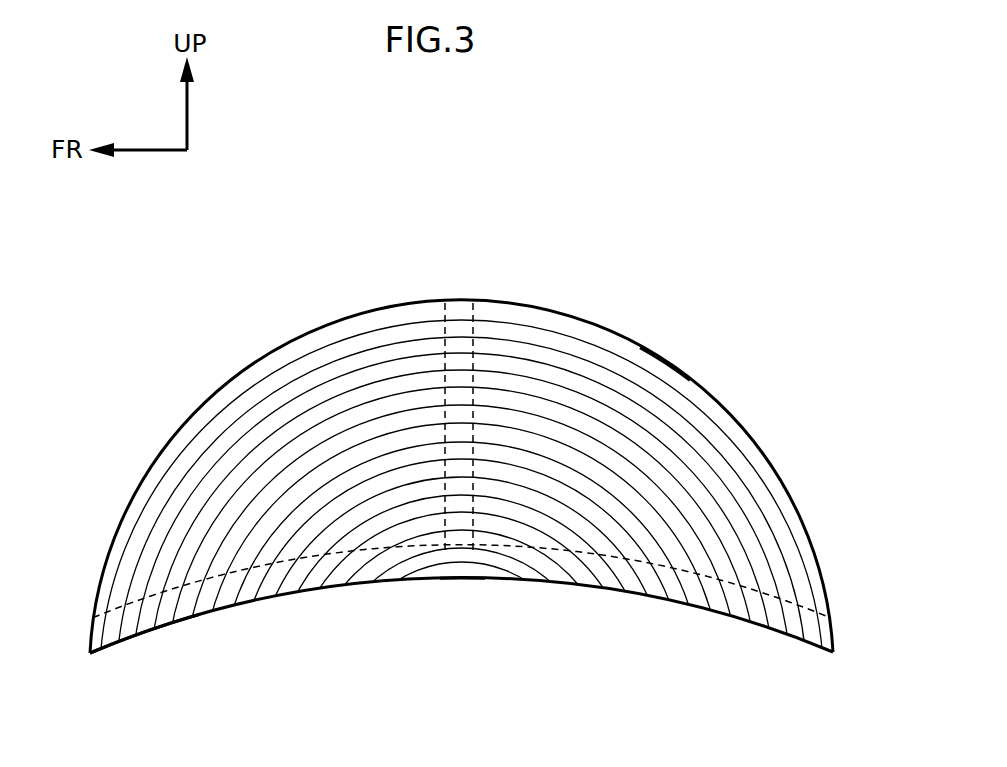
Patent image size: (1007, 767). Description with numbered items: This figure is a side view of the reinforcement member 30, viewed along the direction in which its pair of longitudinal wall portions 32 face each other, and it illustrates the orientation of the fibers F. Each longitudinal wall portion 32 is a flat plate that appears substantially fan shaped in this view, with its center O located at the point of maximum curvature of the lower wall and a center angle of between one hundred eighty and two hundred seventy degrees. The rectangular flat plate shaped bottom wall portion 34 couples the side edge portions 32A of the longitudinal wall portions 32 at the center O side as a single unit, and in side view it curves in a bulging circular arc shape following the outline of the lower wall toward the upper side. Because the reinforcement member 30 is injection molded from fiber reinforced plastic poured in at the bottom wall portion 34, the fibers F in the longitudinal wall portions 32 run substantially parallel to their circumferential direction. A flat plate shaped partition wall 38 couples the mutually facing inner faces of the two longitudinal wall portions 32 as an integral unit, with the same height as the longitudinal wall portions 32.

The reinforcement member 30 is at (552, 295).
The longitudinal wall portion 32 is at (368, 323).
The side edge portion 32A is at (673, 590).
The bottom wall portion 34 is at (128, 640).
The partition wall 38 is at (462, 306).
The fibers F is at (667, 380).
The center O is at (470, 578).